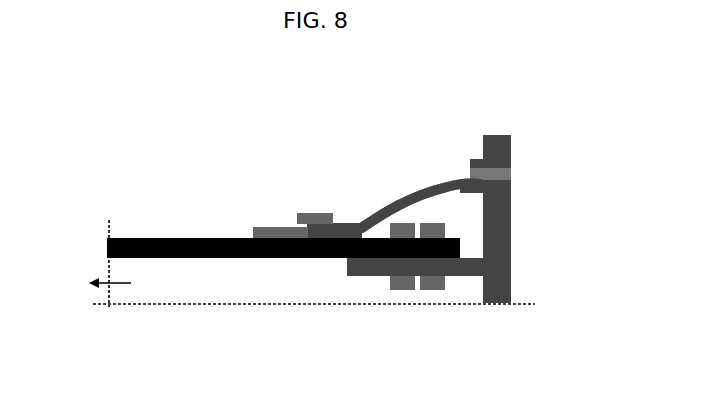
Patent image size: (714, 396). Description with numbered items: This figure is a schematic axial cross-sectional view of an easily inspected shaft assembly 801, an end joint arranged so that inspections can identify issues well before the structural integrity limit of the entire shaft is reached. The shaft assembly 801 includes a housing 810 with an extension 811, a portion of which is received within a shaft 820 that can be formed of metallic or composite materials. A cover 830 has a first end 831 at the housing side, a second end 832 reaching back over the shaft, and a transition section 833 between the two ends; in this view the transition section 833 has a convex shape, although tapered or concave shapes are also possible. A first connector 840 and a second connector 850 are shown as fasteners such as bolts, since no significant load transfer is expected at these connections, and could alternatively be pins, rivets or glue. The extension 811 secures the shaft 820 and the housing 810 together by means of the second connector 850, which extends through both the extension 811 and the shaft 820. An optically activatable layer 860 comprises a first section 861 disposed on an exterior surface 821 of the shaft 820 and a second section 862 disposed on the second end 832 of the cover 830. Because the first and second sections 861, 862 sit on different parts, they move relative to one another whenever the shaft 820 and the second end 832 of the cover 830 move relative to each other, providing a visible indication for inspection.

The shaft assembly 801 is at (133, 171).
The housing 810 is at (510, 143).
The extension 811 is at (467, 276).
The shaft 820 is at (153, 238).
The exterior surface 821 is at (217, 238).
The cover 830 is at (462, 181).
The first end 831 is at (475, 161).
The second end 832 is at (350, 226).
The transition section 833 is at (420, 193).
The first connector 840 is at (510, 174).
The second connector 850 is at (405, 288).
The optically activatable layer 860 is at (327, 221).
The first section 861 is at (255, 228).
The second section 862 is at (315, 217).